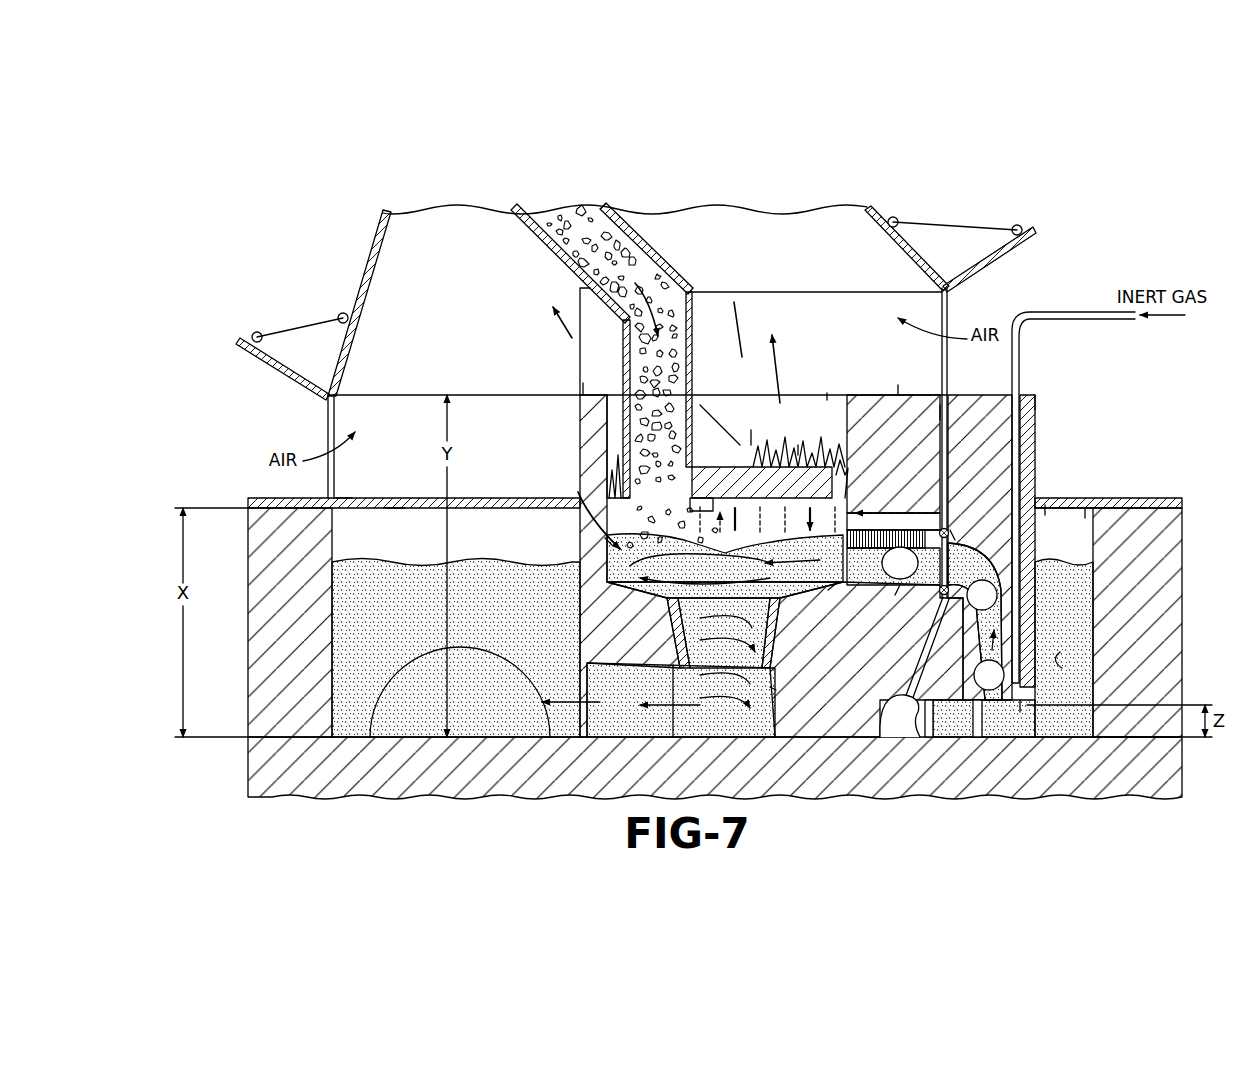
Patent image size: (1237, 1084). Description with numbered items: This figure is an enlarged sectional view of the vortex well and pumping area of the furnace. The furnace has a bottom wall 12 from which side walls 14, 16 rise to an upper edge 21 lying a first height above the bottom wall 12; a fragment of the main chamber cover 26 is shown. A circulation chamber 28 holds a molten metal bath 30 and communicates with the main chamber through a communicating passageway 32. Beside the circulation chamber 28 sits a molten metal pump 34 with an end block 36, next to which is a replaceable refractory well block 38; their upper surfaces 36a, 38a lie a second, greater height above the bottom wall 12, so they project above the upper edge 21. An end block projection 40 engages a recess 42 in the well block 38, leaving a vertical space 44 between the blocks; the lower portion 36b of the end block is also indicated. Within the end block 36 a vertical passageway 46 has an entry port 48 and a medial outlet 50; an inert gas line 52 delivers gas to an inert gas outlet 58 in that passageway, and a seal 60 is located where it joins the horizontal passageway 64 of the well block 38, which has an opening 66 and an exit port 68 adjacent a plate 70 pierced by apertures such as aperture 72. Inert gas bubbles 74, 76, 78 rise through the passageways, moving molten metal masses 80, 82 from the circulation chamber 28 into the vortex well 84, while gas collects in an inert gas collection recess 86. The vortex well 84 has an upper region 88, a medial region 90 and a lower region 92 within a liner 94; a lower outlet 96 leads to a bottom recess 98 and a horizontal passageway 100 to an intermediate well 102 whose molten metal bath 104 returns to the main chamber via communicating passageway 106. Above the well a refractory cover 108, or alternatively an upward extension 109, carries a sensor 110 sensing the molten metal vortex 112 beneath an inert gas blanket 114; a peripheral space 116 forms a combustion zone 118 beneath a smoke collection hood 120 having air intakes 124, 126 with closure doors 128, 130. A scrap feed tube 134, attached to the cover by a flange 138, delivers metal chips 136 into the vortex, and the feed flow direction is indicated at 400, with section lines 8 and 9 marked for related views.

The section line for FIG. 8 is at (255, 523).
The section line for FIG. 9 is at (580, 378).
The bottom wall 12 is at (1152, 792).
The side wall 14 is at (250, 672).
The side wall 16 is at (1182, 757).
The upper edge 21 is at (260, 497).
The cover 26 is at (345, 503).
The circulation chamber 28 is at (1083, 558).
The molten metal bath 30 is at (1083, 690).
The communicating passageway 32 is at (1060, 668).
The molten metal pump 34 is at (1040, 397).
The end block 36 is at (1040, 440).
The upper surface of end block 36a is at (983, 395).
The wall bottom portion 36b is at (990, 700).
The well block 38 is at (871, 393).
The upper surface of well block 38a is at (583, 383).
The end block projection 40 is at (955, 705).
The recess 42 is at (903, 702).
The vertical space 44 is at (942, 412).
The vertical passageway 46 is at (1085, 508).
The entry port 48 is at (1005, 705).
The medial outlet 50 is at (950, 530).
The inert gas line 52 is at (1068, 320).
The inert gas outlet 58 is at (1020, 700).
The seal 60 is at (950, 515).
The horizontal passageway 64 is at (866, 578).
The opening 66 is at (900, 580).
The exit port 68 is at (828, 590).
The plate 70 is at (915, 520).
The aperture 72 is at (910, 530).
The inert gas bubble 74 is at (895, 595).
The inert gas bubble 76 is at (985, 596).
The inert gas bubble 78 is at (990, 673).
The molten metal mass 80 is at (1045, 505).
The molten metal mass 82 is at (1000, 620).
The vortex well 84 is at (751, 430).
The inert gas collection recess 86 is at (880, 510).
The upper region 88 is at (606, 560).
The medial region 90 is at (640, 602).
The lower region 92 is at (692, 638).
The liner 94 is at (786, 632).
The lower outlet 96 is at (770, 687).
The bottom recess 98 is at (762, 722).
The horizontal passageway 100 is at (612, 722).
The intermediate well 102 is at (394, 508).
The molten metal bath 104 is at (358, 638).
The communicating passageway 106 is at (393, 690).
The refractory cover 108 is at (776, 462).
The upward extension of the vortex well 109 is at (818, 302).
The sensor 110 is at (710, 490).
The molten metal vortex 112 is at (605, 538).
The inert gas blanket 114 is at (827, 393).
The peripheral space 116 is at (600, 497).
The combustion zone 118 is at (798, 445).
The smoke collection hood 120 is at (366, 263).
The air intake 124 is at (327, 418).
The air intake 126 is at (948, 314).
The closure door 128 is at (275, 372).
The closure door 130 is at (1000, 260).
The scrap feed tube 134 is at (650, 256).
The metal chips 136 is at (586, 275).
The flange 138 is at (700, 405).
The feed flow 400 is at (683, 540).